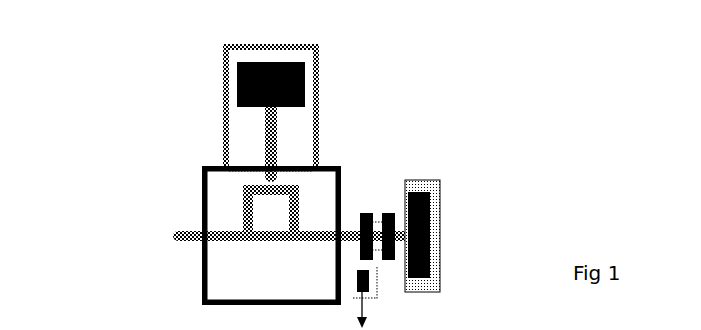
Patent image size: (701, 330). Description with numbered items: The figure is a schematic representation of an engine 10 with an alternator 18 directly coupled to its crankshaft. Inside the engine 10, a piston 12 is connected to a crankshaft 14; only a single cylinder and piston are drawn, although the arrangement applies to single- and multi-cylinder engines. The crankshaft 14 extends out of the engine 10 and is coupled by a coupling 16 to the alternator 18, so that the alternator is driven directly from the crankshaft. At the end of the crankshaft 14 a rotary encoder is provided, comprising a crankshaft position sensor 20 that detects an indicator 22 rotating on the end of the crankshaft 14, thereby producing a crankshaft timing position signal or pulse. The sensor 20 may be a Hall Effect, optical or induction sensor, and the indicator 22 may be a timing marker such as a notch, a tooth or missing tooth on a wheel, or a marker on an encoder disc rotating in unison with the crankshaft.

The engine 10 is at (190, 170).
The piston 12 is at (240, 83).
The crankshaft 14 is at (190, 231).
The coupling 16 is at (379, 207).
The alternator 18 is at (435, 207).
The crankshaft position sensor 20 is at (370, 277).
The indicator 22 is at (363, 213).